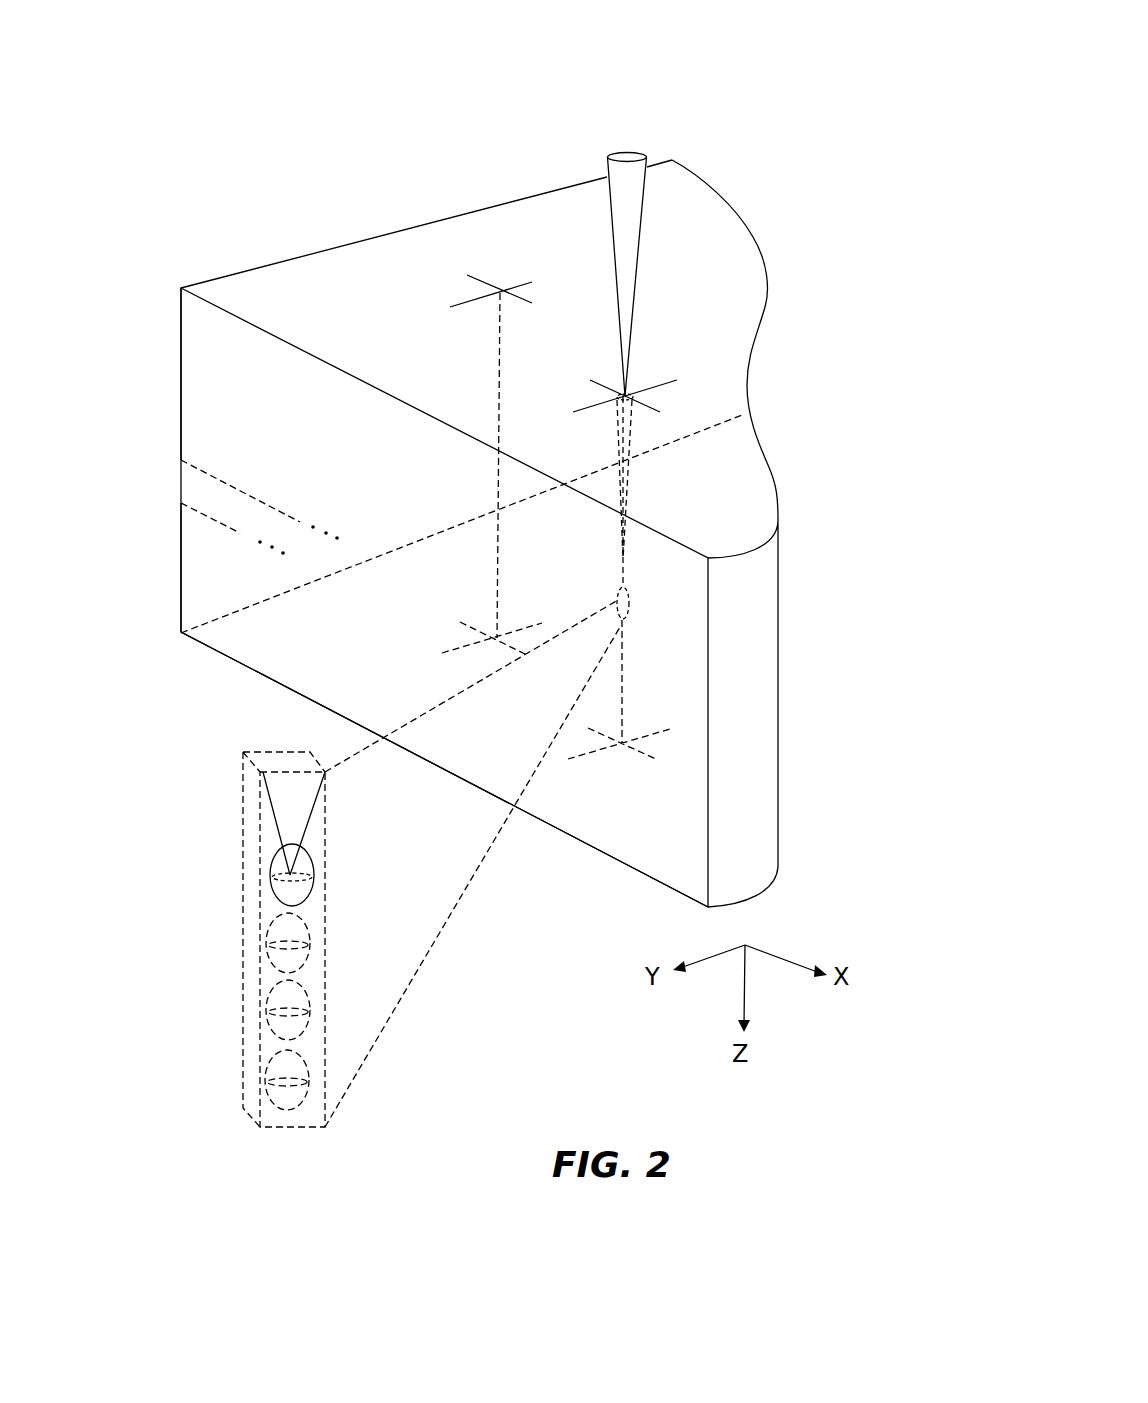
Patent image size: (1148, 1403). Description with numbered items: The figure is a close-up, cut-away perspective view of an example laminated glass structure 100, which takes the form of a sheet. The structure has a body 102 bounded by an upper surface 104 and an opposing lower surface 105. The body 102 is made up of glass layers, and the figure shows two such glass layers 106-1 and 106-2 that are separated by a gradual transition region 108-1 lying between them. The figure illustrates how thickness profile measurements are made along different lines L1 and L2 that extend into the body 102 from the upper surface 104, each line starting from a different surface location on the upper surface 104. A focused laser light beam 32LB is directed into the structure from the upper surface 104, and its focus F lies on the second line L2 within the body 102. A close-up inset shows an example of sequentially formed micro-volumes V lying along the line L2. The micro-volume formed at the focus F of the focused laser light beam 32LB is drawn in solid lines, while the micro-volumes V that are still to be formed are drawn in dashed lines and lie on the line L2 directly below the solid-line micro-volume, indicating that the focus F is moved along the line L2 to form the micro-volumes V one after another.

The laminated glass structure 100 is at (247, 85).
The body 102 is at (216, 386).
The upper surface 104 is at (690, 208).
The lower surface 105 is at (247, 628).
The glass layer 106-1 is at (202, 313).
The glass layer 106-2 is at (200, 562).
The gradual transition region 108-1 is at (187, 488).
The focused laser light beam 32LB is at (632, 260).
The line L1 is at (500, 363).
The line L2 is at (625, 663).
The focus F is at (628, 598).
The micro-volumes V is at (262, 1055).